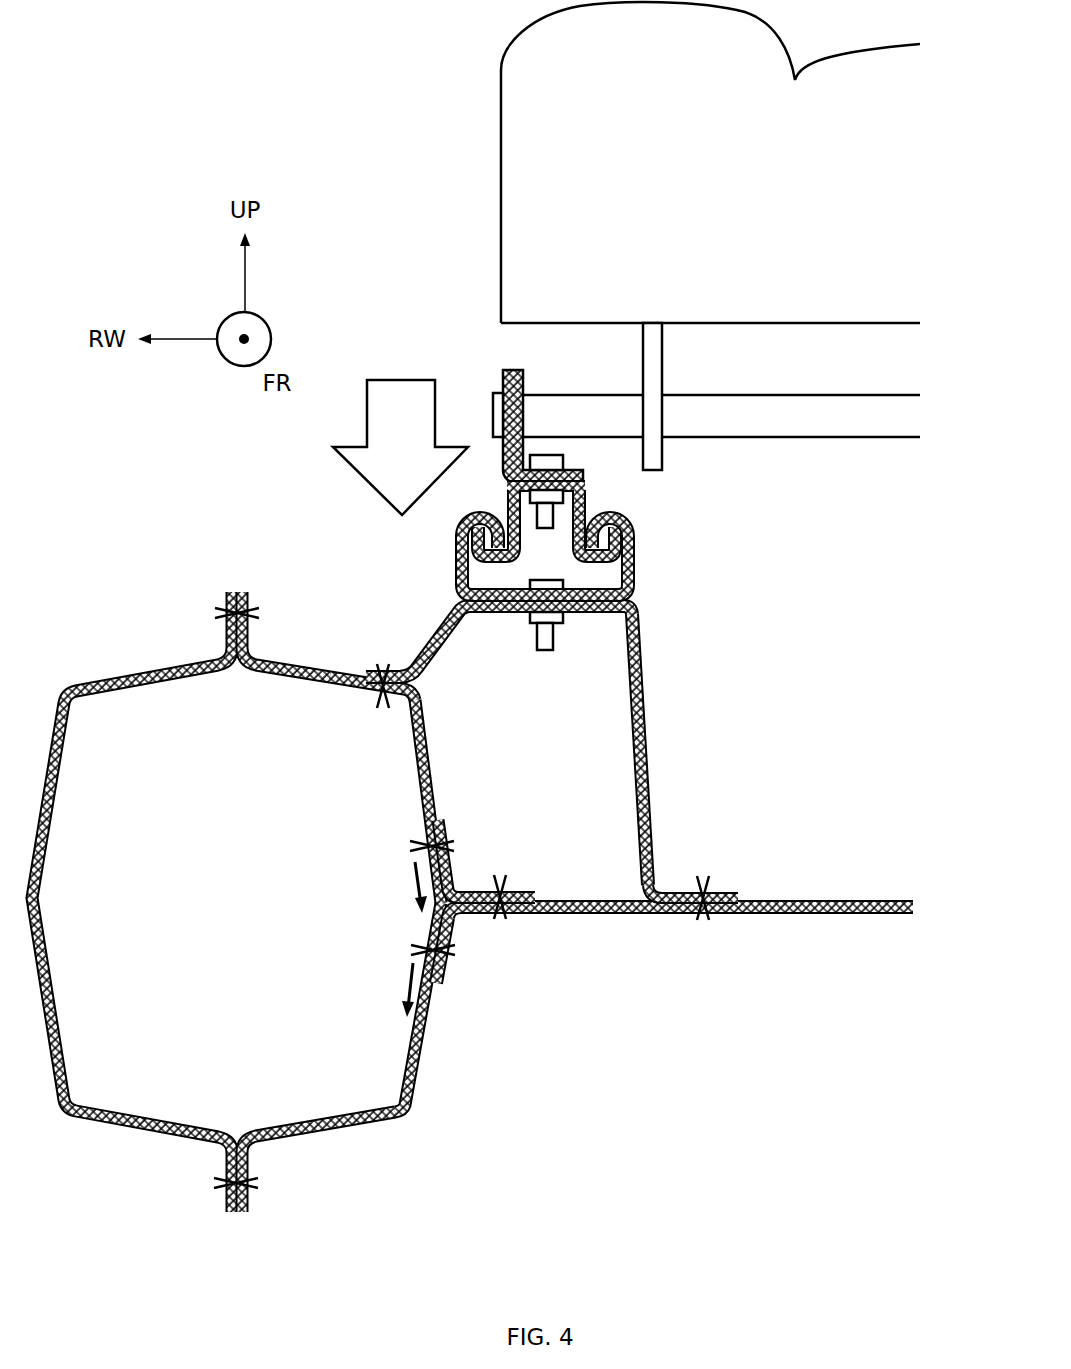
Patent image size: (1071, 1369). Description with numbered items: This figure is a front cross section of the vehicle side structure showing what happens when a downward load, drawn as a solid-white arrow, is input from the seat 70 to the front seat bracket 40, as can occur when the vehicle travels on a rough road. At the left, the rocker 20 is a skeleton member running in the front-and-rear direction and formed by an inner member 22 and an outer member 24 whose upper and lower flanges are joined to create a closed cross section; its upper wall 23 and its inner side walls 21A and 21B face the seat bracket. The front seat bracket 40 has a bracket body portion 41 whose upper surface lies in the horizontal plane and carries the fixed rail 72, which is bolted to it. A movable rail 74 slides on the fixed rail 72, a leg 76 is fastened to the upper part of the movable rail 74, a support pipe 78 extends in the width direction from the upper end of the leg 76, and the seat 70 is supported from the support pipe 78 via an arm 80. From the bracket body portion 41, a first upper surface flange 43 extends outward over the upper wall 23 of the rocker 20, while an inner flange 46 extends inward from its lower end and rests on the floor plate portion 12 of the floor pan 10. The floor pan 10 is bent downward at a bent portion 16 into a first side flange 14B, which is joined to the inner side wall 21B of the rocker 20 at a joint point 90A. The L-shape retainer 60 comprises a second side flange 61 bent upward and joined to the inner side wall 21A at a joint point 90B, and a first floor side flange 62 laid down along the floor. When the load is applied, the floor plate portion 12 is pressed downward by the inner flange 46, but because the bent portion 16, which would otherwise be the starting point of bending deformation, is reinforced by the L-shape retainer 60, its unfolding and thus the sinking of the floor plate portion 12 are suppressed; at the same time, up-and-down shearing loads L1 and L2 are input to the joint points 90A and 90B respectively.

The floor pan 10 is at (674, 969).
The floor plate portion 12 is at (606, 915).
The first side flange 14B is at (447, 968).
The bent portion 16 is at (469, 914).
The rocker 20 is at (236, 833).
The inner side wall 21A is at (410, 748).
The inner side wall 21B is at (404, 1070).
The inner member 22 is at (322, 860).
The upper wall 23 is at (300, 683).
The outer member 24 is at (139, 668).
The front seat bracket 40 is at (565, 750).
The bracket body portion 41 is at (645, 765).
The first upper surface flange 43 is at (383, 680).
The inner flange 46 is at (727, 893).
The L-shape retainer 60 is at (535, 854).
The second side flange 61 is at (440, 817).
The first floor side flange 62 is at (512, 895).
The seat 70 is at (500, 198).
The fixed rail 72 is at (637, 570).
The movable rail 74 is at (630, 558).
The leg 76 is at (515, 370).
The support pipe 78 is at (790, 422).
The arm 80 is at (652, 360).
The joint point 90A is at (430, 950).
The joint point 90B is at (428, 853).
The shearing load L1 is at (413, 982).
The shearing load L2 is at (415, 886).